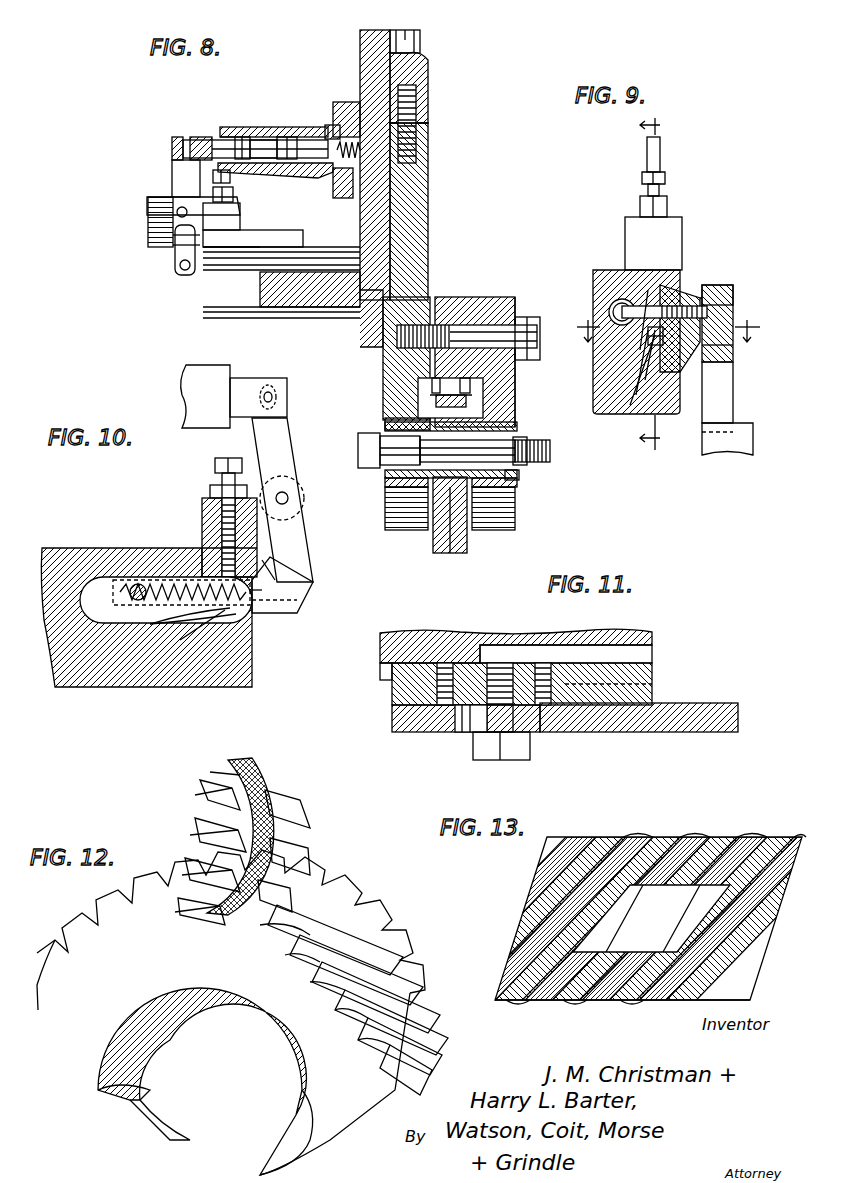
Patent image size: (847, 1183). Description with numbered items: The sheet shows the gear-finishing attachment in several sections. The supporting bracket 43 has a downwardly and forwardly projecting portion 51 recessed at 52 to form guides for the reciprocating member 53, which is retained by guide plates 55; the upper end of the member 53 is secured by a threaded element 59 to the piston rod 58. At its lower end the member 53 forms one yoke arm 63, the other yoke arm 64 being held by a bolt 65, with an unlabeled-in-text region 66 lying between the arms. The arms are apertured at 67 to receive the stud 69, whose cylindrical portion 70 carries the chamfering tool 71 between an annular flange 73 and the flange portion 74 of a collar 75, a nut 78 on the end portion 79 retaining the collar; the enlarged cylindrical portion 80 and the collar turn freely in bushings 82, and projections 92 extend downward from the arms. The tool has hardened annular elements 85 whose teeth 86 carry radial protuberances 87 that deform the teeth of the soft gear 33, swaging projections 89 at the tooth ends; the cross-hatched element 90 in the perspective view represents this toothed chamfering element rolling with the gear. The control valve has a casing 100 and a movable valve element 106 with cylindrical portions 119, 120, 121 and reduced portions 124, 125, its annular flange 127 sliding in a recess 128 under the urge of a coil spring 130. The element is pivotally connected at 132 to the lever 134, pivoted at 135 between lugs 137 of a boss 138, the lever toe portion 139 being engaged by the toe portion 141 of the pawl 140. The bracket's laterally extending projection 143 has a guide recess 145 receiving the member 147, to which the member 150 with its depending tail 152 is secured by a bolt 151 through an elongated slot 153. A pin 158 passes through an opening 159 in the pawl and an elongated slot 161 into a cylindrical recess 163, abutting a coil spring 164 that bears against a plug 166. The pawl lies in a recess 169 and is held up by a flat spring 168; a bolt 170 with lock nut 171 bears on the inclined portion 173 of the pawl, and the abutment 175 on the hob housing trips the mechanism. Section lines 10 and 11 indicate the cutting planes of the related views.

In FIG. 9, the section line 10— 10 is at (649, 282).
In FIG. 9, the section line 11— 11 is at (670, 329).
In FIG. 8, the gear 33 is at (455, 553).
In FIG. 13, the gear 33 is at (515, 1003).
In FIG. 8, the supporting bracket 43 is at (370, 272).
In FIG. 8, the downwardly and forwardly projecting portion 51 is at (362, 73).
In FIG. 8, the recess 52 is at (400, 33).
In FIG. 8, the reciprocating member 53 is at (428, 229).
In FIG. 8, the guide plates 55 is at (422, 45).
In FIG. 8, the piston rod 58 is at (425, 70).
In FIG. 8, the threaded element 59 is at (420, 105).
In FIG. 8, the yoke arm 63 is at (385, 410).
In FIG. 8, the yoke arm 64 is at (516, 388).
In FIG. 8, the bolt 65 is at (470, 330).
In FIG. 8, the recess 66 is at (448, 395).
In FIG. 8, the apertures 67 is at (517, 420).
In FIG. 8, the stud 69 is at (360, 455).
In FIG. 8, the cylindrical portion 70 is at (430, 450).
In FIG. 8, the chamfering tool 71 is at (451, 388).
In FIG. 8, the annular flange 73 is at (406, 358).
In FIG. 8, the flange portion 74 is at (488, 385).
In FIG. 8, the collar 75 is at (520, 478).
In FIG. 8, the nut 78 is at (528, 465).
In FIG. 8, the end portion 79 is at (550, 452).
In FIG. 8, the enlarged cylindrical portion 80 is at (390, 445).
In FIG. 8, the bushings 82 is at (518, 427).
In FIG. 8, the hardened annular elements 85 is at (447, 452).
In FIG. 12, the teeth 86 is at (290, 820).
In FIG. 13, the teeth 86 is at (690, 838).
In FIG. 12, the radial protuberances 87 is at (210, 805).
In FIG. 13, the radial protuberances 87 is at (682, 836).
In FIG. 13, the projections 89 is at (655, 836).
In FIG. 8, the worm 90 is at (440, 535).
In FIG. 12, the worm 90 is at (250, 775).
In FIG. 8, the downwardly extending projections 92 is at (385, 515).
In FIG. 8, the valve casing 100 is at (226, 143).
In FIG. 10, the valve casing 100 is at (195, 368).
In FIG. 8, the movable valve element 106 is at (198, 138).
In FIG. 10, the movable valve element 106 is at (240, 380).
In FIG. 8, the cylindrical portion 119 is at (312, 140).
In FIG. 8, the cylindrical portion 120 is at (262, 140).
In FIG. 8, the cylindrical portion 121 is at (218, 142).
In FIG. 8, the reduced portion 124 is at (286, 136).
In FIG. 8, the reduced portion 125 is at (242, 136).
In FIG. 8, the annular flange 127 is at (320, 172).
In FIG. 8, the recess 128 is at (345, 160).
In FIG. 8, the coil spring 130 is at (343, 198).
In FIG. 8, the pivotal connection 132 is at (176, 148).
In FIG. 10, the pivotal connection 132 is at (270, 393).
In FIG. 8, the lever 134 is at (185, 178).
In FIG. 9, the lever 134 is at (662, 145).
In FIG. 10, the lever 134 is at (252, 440).
In FIG. 8, the pivot 135 is at (180, 214).
In FIG. 10, the pivot 135 is at (222, 495).
In FIG. 10, the lugs 137 is at (268, 480).
In FIG. 8, the boss 138 is at (175, 240).
In FIG. 9, the boss 138 is at (675, 225).
In FIG. 10, the boss 138 is at (204, 520).
In FIG. 8, the toe portion 139 is at (178, 262).
In FIG. 10, the toe portion 139 is at (310, 582).
In FIG. 9, the pawl 140 is at (668, 290).
In FIG. 10, the pawl 140 is at (228, 612).
In FIG. 8, the toe portion 141 is at (185, 272).
In FIG. 10, the toe portion 141 is at (300, 598).
In FIG. 8, the laterally extending projection 143 is at (300, 290).
In FIG. 9, the laterally extending projection 143 is at (598, 272).
In FIG. 10, the laterally extending projection 143 is at (98, 680).
In FIG. 11, the laterally extending projection 143 is at (655, 633).
In FIG. 9, the guide recess 145 is at (697, 295).
In FIG. 11, the guide recess 145 is at (382, 672).
In FIG. 9, the member 147 is at (720, 340).
In FIG. 11, the member 147 is at (640, 693).
In FIG. 9, the member 150 is at (733, 295).
In FIG. 11, the member 150 is at (580, 720).
In FIG. 11, the bolt 151 is at (490, 750).
In FIG. 8, the depending tail 152 is at (205, 250).
In FIG. 9, the depending tail 152 is at (733, 385).
In FIG. 11, the depending tail 152 is at (445, 668).
In FIG. 11, the elongated slot 153 is at (462, 730).
In FIG. 9, the pin 158 is at (720, 288).
In FIG. 10, the pin 158 is at (132, 597).
In FIG. 9, the opening 159 is at (650, 285).
In FIG. 9, the elongated slot 161 is at (648, 334).
In FIG. 9, the cylindrical recess 163 is at (612, 305).
In FIG. 9, the coil spring 164 is at (614, 312).
In FIG. 10, the coil spring 164 is at (148, 603).
In FIG. 10, the plug 166 is at (268, 565).
In FIG. 9, the flat spring 168 is at (640, 380).
In FIG. 10, the flat spring 168 is at (185, 640).
In FIG. 9, the recess 169 is at (635, 355).
In FIG. 10, the recess 169 is at (100, 585).
In FIG. 11, the recess 169 is at (622, 653).
In FIG. 8, the bolt 170 is at (213, 176).
In FIG. 9, the bolt 170 is at (647, 188).
In FIG. 10, the bolt 170 is at (218, 545).
In FIG. 8, the lock nut 171 is at (233, 192).
In FIG. 9, the lock nut 171 is at (640, 210).
In FIG. 10, the lock nut 171 is at (222, 482).
In FIG. 10, the inclined portion 173 is at (269, 580).
In FIG. 8, the abutment 175 is at (185, 250).
In FIG. 9, the abutment 175 is at (753, 435).